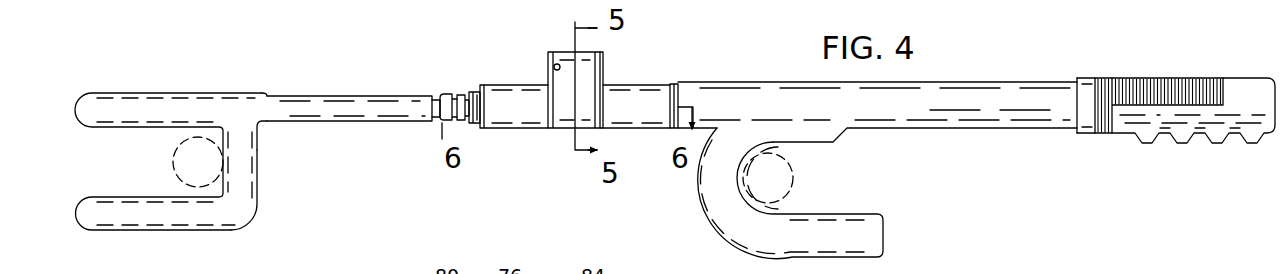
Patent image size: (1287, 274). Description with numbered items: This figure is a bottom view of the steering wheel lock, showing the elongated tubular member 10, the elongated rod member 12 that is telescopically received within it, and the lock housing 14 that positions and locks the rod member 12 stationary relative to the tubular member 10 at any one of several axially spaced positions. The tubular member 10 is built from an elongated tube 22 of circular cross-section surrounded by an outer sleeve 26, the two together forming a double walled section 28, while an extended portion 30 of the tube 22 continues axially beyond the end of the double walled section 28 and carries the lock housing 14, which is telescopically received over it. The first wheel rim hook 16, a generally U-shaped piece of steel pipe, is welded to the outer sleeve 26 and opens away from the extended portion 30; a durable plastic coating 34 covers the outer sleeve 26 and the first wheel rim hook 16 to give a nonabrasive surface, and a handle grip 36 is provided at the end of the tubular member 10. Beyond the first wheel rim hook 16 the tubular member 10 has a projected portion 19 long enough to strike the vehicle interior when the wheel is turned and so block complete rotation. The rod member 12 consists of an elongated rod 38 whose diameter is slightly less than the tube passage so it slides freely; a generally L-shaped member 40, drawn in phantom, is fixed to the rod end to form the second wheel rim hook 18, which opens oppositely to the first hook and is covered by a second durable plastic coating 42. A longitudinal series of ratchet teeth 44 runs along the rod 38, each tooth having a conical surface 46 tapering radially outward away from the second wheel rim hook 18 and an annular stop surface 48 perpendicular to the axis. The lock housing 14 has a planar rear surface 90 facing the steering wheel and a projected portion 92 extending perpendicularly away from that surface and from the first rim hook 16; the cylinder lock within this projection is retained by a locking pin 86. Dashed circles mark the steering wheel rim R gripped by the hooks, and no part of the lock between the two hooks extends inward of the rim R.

The elongated tubular member 10 is at (975, 144).
The elongated rod member 12 is at (385, 124).
The lock housing 14 is at (651, 85).
The first wheel rim hook 16 is at (713, 198).
The second wheel rim hook 18 is at (257, 163).
The projected portion 19 is at (1090, 73).
The elongated tube 22 is at (474, 127).
The outer sleeve 26 is at (678, 84).
The double walled section 28 is at (747, 77).
The extended portion 30 is at (474, 92).
The durable plastic coating 34 is at (982, 92).
The handle grip 36 is at (1235, 82).
The elongated rod 38 is at (327, 96).
The generally L-shaped member 40 is at (257, 197).
The second durable plastic coating 42 is at (260, 93).
The ratchet teeth 44 is at (436, 126).
The conical surface 46 is at (442, 95).
The annular stop surface 48 is at (455, 94).
The locking pin 86 is at (554, 66).
The planar rear surface 90 is at (527, 129).
The projected portion 92 is at (600, 65).
The steering wheel rim R is at (175, 152).